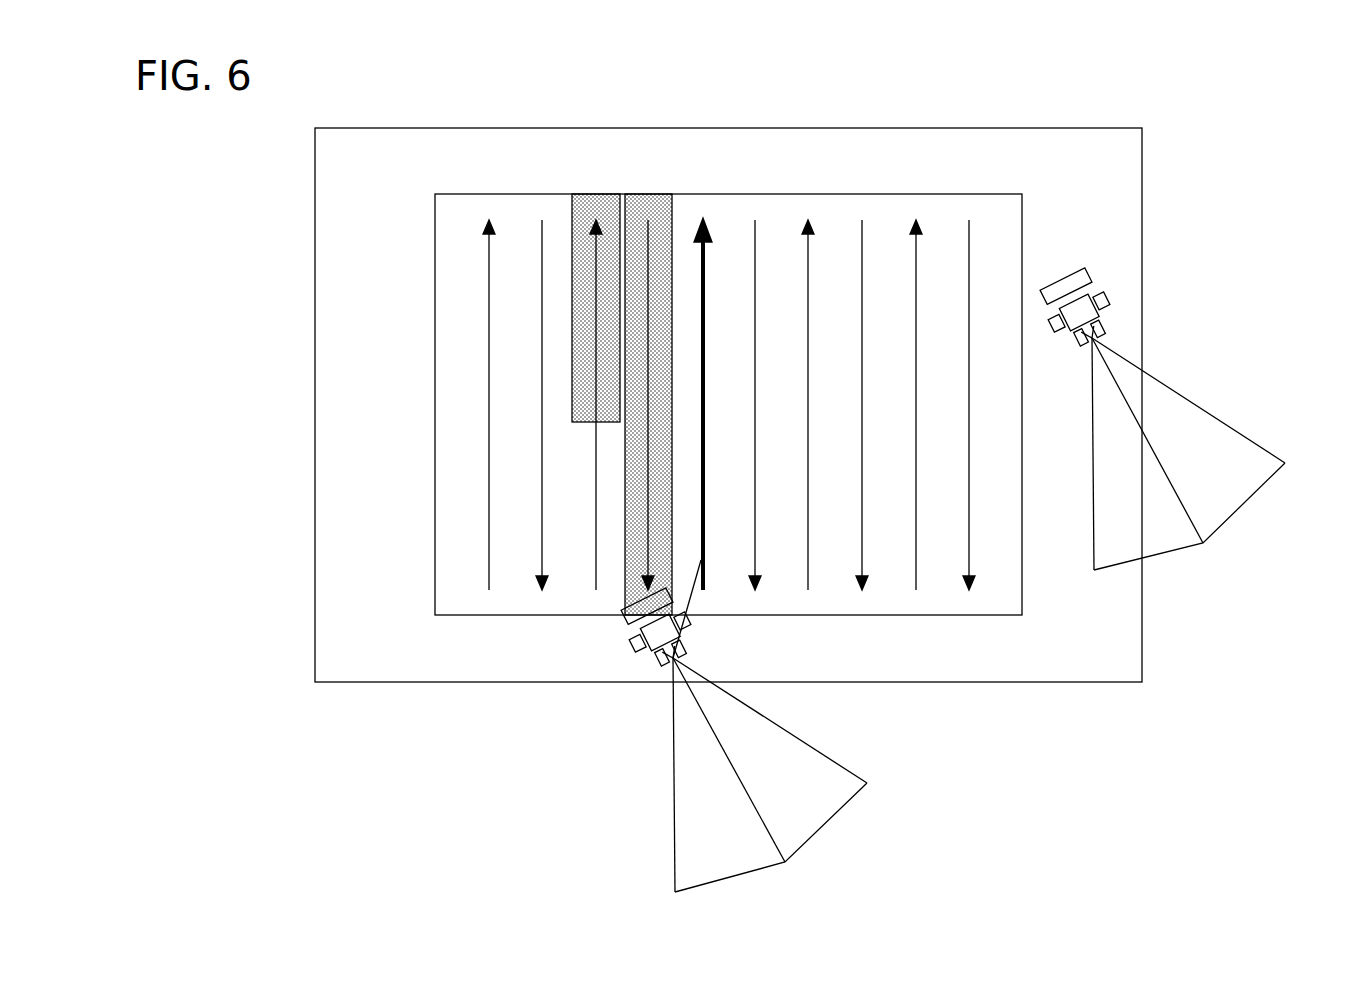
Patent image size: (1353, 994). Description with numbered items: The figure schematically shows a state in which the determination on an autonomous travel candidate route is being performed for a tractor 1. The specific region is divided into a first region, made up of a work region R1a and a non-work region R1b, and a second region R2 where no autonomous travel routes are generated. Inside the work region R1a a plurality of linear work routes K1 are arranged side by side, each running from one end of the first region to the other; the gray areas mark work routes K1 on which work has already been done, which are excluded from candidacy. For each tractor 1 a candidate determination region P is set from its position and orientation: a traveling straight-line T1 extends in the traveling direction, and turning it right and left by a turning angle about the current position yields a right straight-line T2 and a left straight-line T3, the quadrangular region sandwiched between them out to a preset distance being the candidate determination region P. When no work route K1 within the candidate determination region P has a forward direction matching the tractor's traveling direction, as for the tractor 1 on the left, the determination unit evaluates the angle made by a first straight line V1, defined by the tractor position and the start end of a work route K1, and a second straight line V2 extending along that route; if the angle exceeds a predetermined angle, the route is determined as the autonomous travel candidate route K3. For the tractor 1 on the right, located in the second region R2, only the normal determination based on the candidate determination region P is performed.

The tractor 1 is at (640, 648).
The work route K1 is at (540, 358).
The autonomous travel candidate route K3 is at (704, 288).
The first straight line V1 is at (700, 618).
The second straight line V2 is at (782, 336).
The work region R1a is at (940, 598).
The non-work region R1b is at (503, 655).
The second region R2 is at (340, 437).
The candidate determination region P is at (948, 615).
The traveling straight-line T1 is at (772, 832).
The right straight-line T2 is at (673, 865).
The left straight-line T3 is at (815, 745).